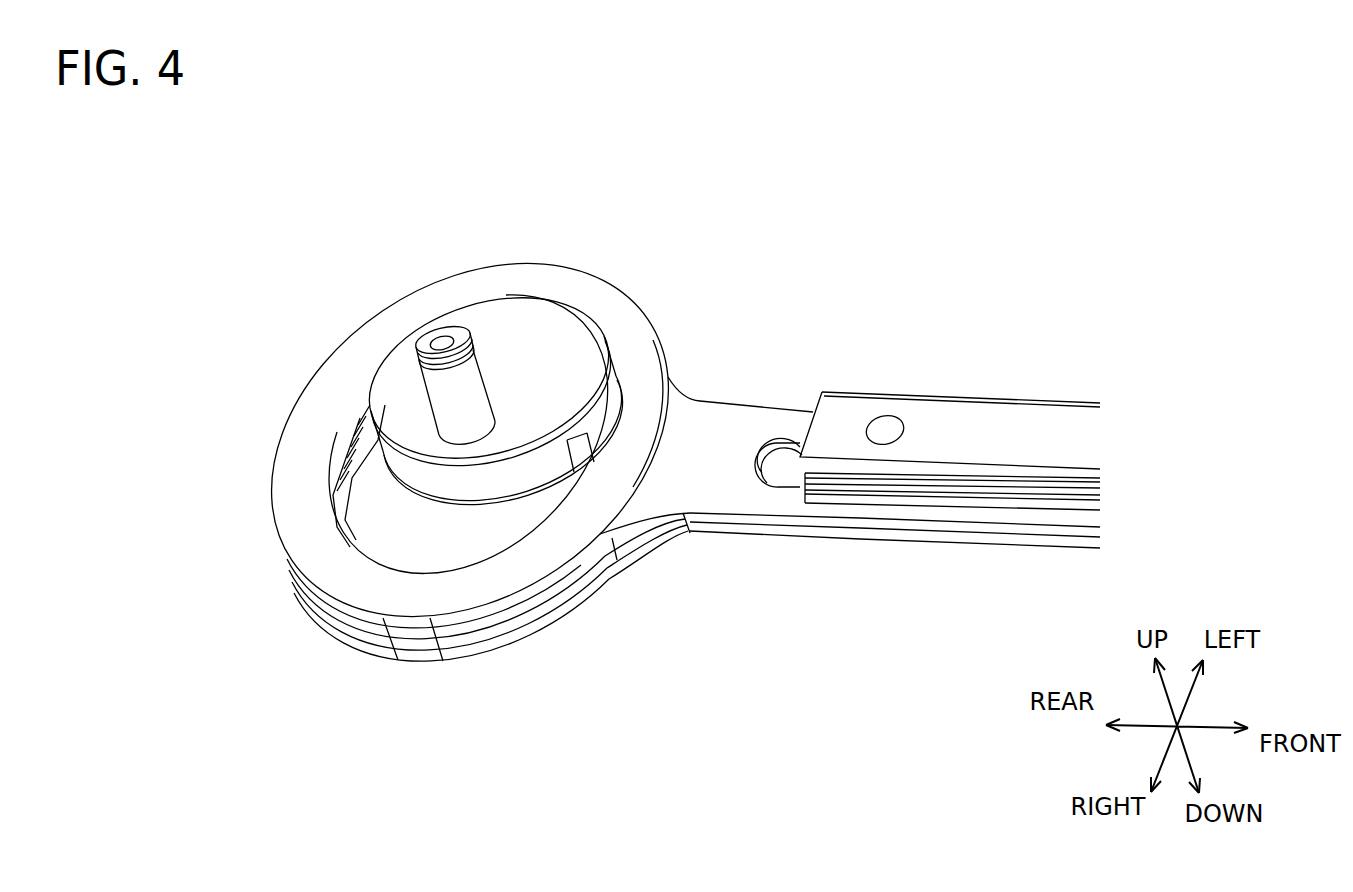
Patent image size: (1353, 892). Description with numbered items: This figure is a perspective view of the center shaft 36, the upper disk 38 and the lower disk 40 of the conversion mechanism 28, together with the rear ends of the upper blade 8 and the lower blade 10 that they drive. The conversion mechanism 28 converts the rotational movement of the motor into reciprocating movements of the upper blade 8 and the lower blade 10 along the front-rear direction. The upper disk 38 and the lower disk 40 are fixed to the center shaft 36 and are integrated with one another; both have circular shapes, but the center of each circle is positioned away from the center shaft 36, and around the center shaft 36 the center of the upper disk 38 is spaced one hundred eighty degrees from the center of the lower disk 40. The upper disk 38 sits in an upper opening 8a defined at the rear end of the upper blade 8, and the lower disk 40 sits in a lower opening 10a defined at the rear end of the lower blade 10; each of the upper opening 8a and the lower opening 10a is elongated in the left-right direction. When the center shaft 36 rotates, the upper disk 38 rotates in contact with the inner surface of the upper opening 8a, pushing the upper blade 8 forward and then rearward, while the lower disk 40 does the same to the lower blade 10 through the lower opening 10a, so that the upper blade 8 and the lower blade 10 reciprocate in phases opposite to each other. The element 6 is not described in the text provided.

The conversion mechanism 28 is at (232, 335).
The upper disk 38 is at (555, 333).
The center shaft 36 is at (463, 423).
The lower disk 40 is at (397, 552).
The upper blade 8 is at (738, 425).
The upper opening 8a is at (358, 433).
The lower blade 10 is at (850, 537).
The lower opening 10a is at (376, 415).
The arm bar with hole 6 is at (846, 407).